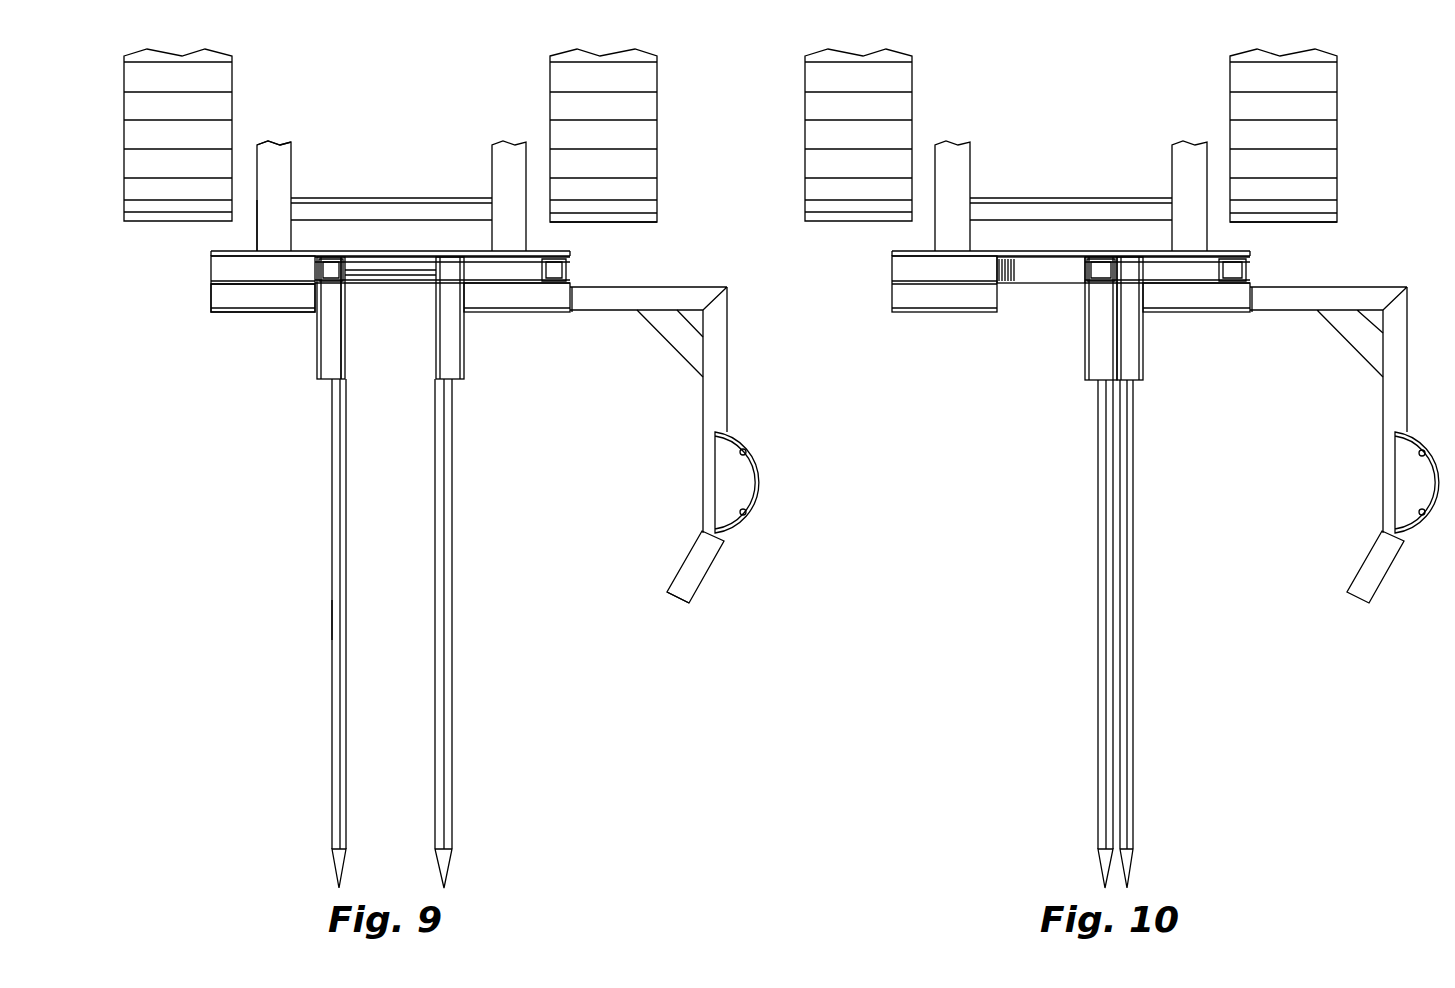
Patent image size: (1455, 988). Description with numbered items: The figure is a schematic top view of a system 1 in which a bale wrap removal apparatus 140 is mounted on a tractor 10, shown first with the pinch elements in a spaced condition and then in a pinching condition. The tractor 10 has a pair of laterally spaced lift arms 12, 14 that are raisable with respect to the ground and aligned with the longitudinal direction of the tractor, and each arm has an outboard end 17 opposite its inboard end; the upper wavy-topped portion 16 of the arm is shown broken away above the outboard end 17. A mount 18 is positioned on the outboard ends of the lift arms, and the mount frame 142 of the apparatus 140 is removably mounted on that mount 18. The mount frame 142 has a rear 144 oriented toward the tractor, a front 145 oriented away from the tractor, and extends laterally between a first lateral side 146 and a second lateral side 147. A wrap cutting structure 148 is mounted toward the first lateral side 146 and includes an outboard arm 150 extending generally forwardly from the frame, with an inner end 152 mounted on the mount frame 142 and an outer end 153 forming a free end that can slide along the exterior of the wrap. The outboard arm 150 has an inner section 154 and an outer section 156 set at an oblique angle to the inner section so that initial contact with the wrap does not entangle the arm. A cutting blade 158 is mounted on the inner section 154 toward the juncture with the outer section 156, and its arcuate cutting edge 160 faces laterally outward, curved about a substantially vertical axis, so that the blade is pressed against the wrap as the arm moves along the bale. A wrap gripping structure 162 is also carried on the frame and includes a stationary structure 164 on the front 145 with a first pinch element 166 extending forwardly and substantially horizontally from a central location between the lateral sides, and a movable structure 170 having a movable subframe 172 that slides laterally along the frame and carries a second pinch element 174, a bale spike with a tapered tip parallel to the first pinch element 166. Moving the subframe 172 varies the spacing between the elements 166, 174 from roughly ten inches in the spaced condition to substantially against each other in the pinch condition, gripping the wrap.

In FIG. 9, the system 1 is at (662, 50).
In FIG. 10, the system 1 is at (1342, 50).
In FIG. 9, the tractor 10 is at (668, 146).
In FIG. 10, the tractor 10 is at (1348, 146).
In FIG. 9, the lift arm 12 is at (280, 192).
In FIG. 9, the lift arm 14 is at (508, 191).
In FIG. 9, the post top 16 is at (293, 150).
In FIG. 9, the outboard end 17 is at (273, 218).
In FIG. 9, the mount 18 is at (545, 253).
In FIG. 9, the bale wrap removal apparatus 140 is at (312, 627).
In FIG. 9, the mount frame 142 is at (223, 285).
In FIG. 10, the rear 144 is at (1226, 250).
In FIG. 10, the front 145 is at (1040, 292).
In FIG. 9, the first lateral side 146 is at (590, 268).
In FIG. 10, the first lateral side 146 is at (1265, 272).
In FIG. 9, the second lateral side 147 is at (208, 262).
In FIG. 10, the second lateral side 147 is at (888, 262).
In FIG. 9, the wrap cutting structure 148 is at (733, 519).
In FIG. 10, the wrap cutting structure 148 is at (1418, 543).
In FIG. 9, the outboard arm 150 is at (710, 362).
In FIG. 10, the outboard arm 150 is at (1398, 390).
In FIG. 9, the inner end 152 is at (665, 298).
In FIG. 9, the outer end 153 is at (673, 590).
In FIG. 9, the inner section 154 is at (703, 402).
In FIG. 9, the outer section 156 is at (680, 570).
In FIG. 9, the cutting blade 158 is at (720, 483).
In FIG. 9, the cutting edge 160 is at (745, 440).
In FIG. 9, the wrap gripping structure 162 is at (318, 808).
In FIG. 10, the wrap gripping structure 162 is at (1075, 797).
In FIG. 9, the stationary structure 164 is at (480, 380).
In FIG. 10, the stationary structure 164 is at (1155, 372).
In FIG. 9, the first pinch element 166 is at (452, 803).
In FIG. 9, the movable structure 170 is at (302, 352).
In FIG. 10, the movable structure 170 is at (1075, 373).
In FIG. 9, the movable subframe 172 is at (345, 333).
In FIG. 9, the second pinch element 174 is at (333, 450).